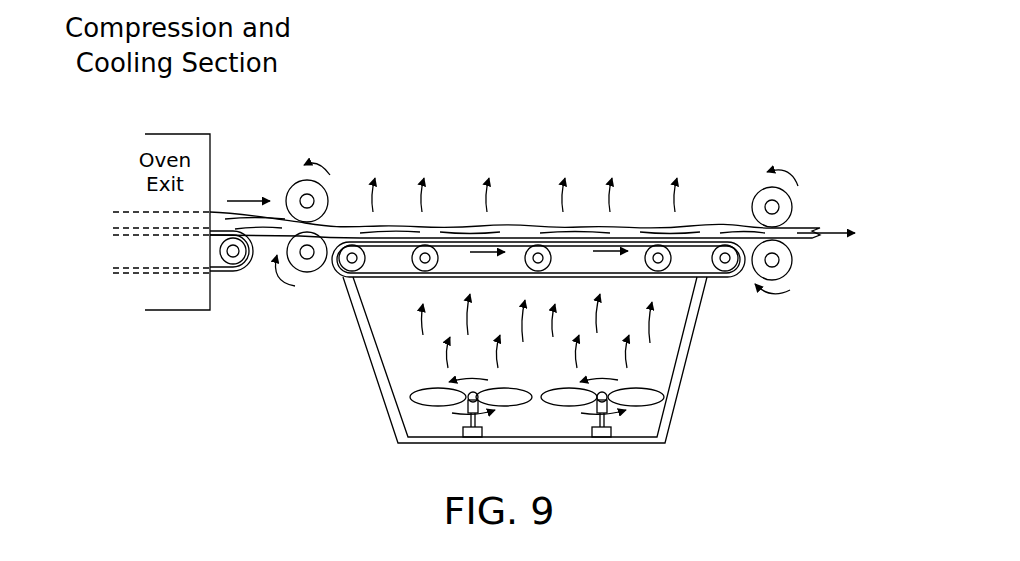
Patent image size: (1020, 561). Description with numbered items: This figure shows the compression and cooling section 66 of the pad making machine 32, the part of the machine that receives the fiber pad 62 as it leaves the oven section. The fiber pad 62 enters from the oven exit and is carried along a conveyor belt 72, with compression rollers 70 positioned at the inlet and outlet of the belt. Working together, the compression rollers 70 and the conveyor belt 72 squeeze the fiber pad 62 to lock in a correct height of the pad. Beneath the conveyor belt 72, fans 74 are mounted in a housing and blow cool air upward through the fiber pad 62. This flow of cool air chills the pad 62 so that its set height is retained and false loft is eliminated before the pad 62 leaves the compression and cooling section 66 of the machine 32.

The pad making machine 32 is at (654, 139).
The fiber pad 62 is at (513, 229).
The compression and cooling section 66 is at (591, 166).
The compression rollers 70 is at (292, 192).
The conveyor belt 72 is at (391, 278).
The fans 74 is at (432, 398).